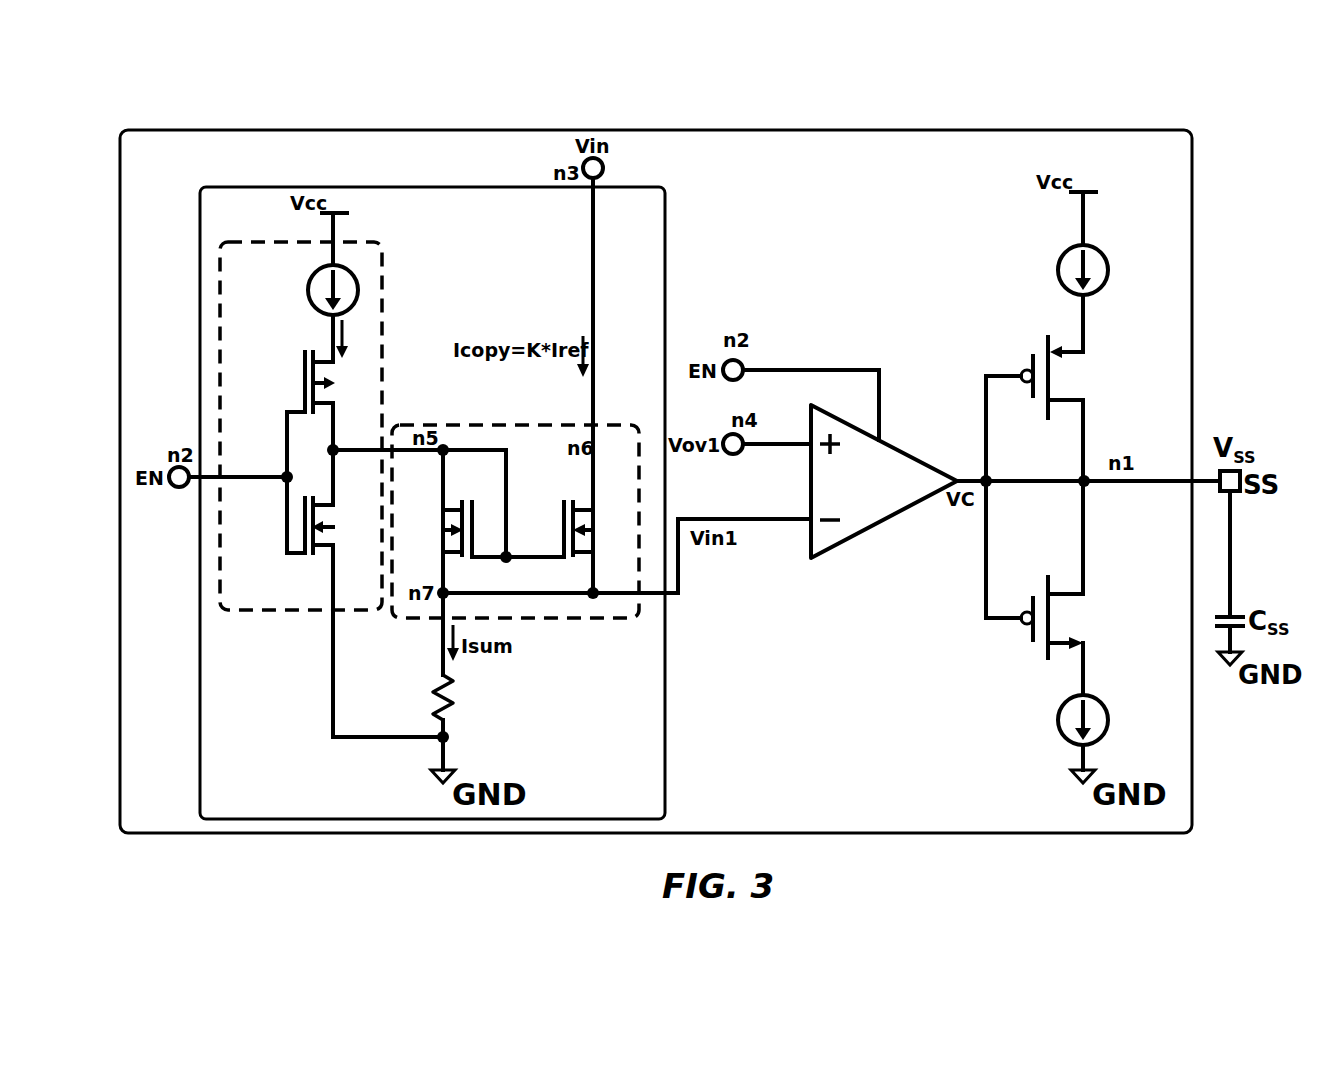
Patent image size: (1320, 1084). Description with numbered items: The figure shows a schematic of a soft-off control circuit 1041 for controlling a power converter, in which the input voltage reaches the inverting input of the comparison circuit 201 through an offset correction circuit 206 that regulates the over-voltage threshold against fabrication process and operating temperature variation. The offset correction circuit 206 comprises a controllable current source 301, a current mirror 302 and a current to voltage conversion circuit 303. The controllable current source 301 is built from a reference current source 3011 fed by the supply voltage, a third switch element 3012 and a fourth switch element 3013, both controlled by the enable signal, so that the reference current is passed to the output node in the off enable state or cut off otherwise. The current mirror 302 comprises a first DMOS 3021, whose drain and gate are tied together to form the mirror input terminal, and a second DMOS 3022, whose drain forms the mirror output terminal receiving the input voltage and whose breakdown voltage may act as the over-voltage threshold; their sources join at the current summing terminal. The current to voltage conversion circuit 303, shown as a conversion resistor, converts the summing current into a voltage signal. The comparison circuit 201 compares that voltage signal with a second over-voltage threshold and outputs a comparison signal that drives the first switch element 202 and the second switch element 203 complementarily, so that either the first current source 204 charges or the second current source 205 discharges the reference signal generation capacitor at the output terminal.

The soft-off control circuit 1041 is at (655, 122).
The offset correction circuit 206 is at (432, 503).
The controllable current source 301 is at (382, 313).
The current mirror 302 is at (450, 423).
The current to voltage conversion circuit 303 is at (470, 702).
The reference current source 3011 is at (308, 290).
The third switch element 3012 is at (302, 382).
The fourth switch element 3013 is at (305, 567).
The first DMOS 3021 is at (436, 520).
The second DMOS 3022 is at (563, 515).
The comparison circuit 201 is at (884, 481).
The first switch element 202 is at (1026, 354).
The second switch element 203 is at (1026, 641).
The first current source 204 is at (1052, 272).
The second current source 205 is at (1050, 731).